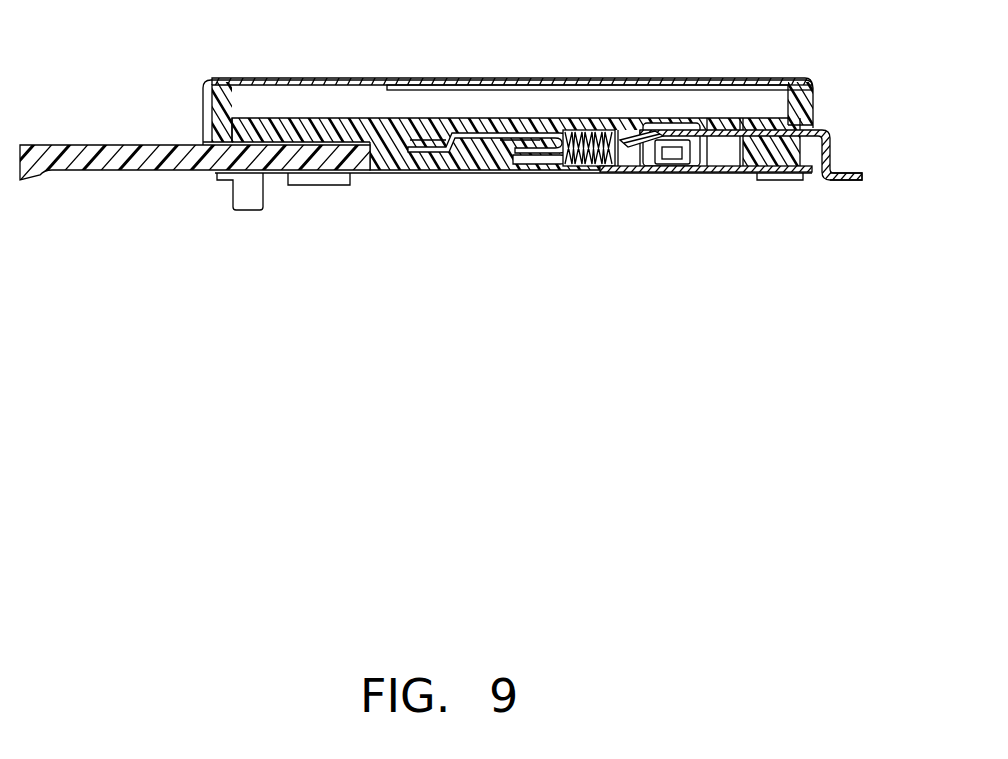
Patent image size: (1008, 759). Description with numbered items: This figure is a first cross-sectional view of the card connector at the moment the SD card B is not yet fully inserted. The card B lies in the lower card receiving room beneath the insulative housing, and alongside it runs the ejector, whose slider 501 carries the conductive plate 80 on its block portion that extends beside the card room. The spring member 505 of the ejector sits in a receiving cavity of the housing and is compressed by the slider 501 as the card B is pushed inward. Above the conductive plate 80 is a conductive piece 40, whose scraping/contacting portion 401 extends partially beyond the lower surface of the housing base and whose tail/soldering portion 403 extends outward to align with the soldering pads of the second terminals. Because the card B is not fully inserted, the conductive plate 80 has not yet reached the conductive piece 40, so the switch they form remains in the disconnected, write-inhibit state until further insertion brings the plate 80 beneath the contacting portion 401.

The conductive piece 40 is at (720, 132).
The scraping/contacting portion 401 is at (633, 137).
The tail/soldering portion 403 is at (845, 180).
The slider 501 is at (395, 173).
The spring member 505 is at (563, 173).
The conductive plate 80 is at (487, 173).
The second card B is at (158, 158).